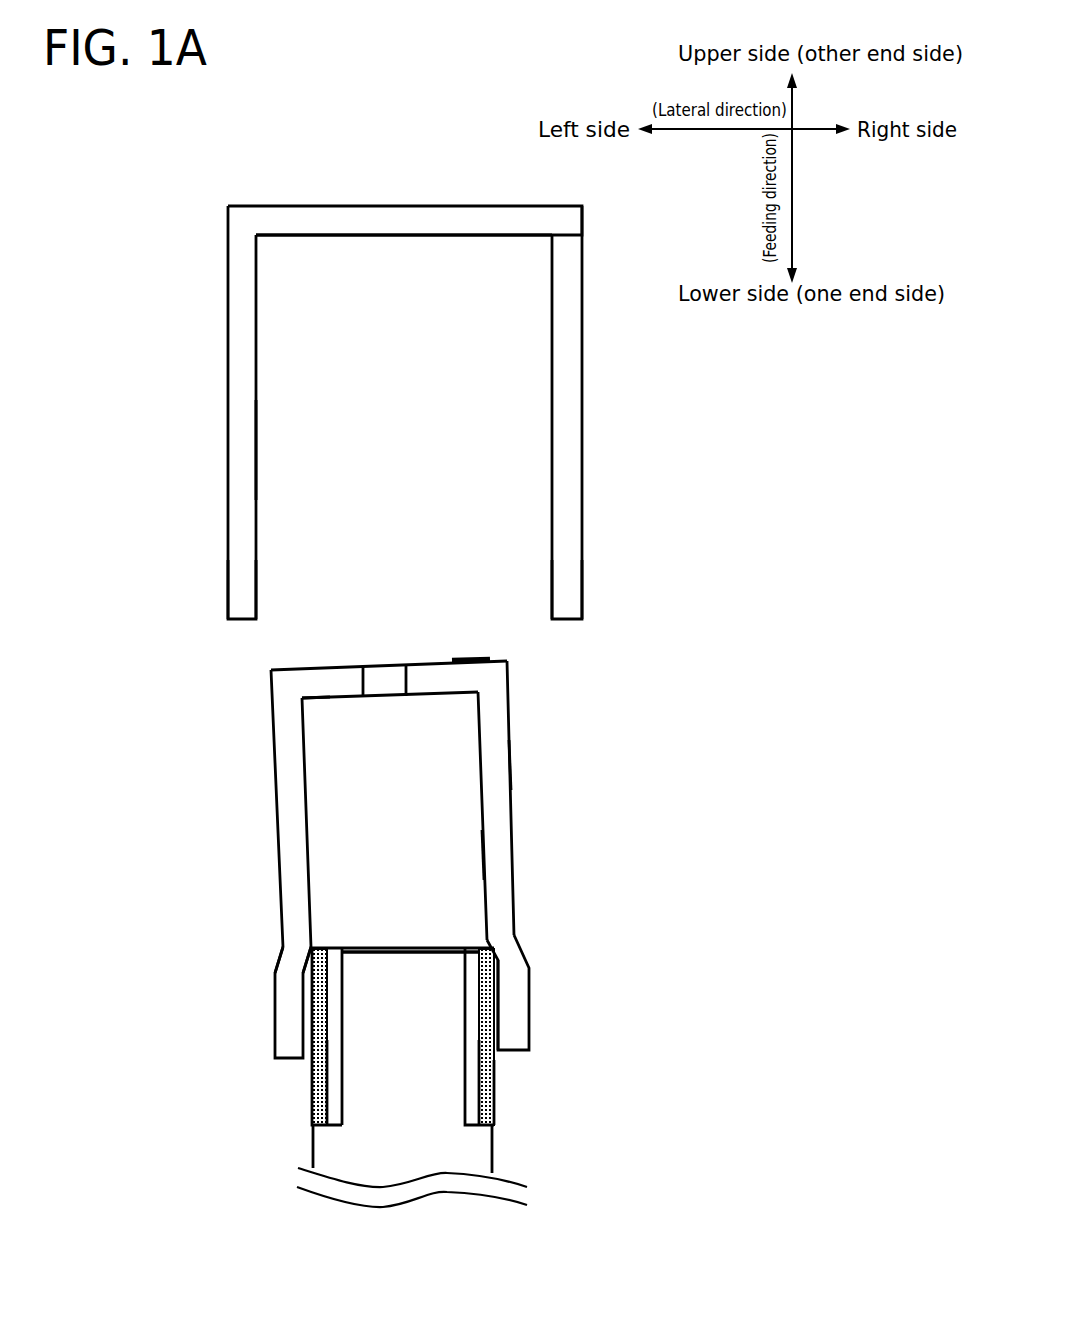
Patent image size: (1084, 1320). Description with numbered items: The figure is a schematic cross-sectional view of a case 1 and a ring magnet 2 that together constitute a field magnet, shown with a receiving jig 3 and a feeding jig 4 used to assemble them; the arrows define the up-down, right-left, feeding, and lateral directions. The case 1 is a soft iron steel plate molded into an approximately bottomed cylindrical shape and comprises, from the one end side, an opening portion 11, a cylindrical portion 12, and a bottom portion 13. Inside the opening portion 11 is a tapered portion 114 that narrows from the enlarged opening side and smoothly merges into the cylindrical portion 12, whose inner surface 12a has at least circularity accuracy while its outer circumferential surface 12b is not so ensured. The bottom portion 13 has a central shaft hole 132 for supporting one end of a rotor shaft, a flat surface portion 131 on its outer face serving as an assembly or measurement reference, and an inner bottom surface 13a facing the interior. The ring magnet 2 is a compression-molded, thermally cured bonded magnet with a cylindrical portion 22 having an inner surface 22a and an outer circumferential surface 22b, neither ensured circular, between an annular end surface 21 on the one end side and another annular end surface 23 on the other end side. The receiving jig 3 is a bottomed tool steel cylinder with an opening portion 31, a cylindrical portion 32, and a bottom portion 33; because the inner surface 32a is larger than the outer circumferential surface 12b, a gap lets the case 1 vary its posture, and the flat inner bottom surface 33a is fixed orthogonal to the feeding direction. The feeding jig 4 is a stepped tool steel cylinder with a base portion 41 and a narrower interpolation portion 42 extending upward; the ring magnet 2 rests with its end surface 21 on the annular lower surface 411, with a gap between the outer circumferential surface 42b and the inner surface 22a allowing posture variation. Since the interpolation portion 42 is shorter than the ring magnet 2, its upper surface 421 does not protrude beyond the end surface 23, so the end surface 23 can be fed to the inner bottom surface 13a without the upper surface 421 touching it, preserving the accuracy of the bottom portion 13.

The case 1 is at (692, 567).
The opening portion 11 is at (527, 997).
The tapered portion 114 is at (492, 958).
The cylindrical portion 12 is at (500, 828).
The inner surface 12a is at (481, 848).
The outer circumferential surface 12b is at (512, 765).
The bottom portion 13 is at (492, 678).
The inner bottom surface 13a is at (331, 700).
The flat surface portion 131 is at (478, 661).
The shaft hole 132 is at (383, 672).
The ring magnet 2 is at (660, 1005).
The annular end surface 21 is at (488, 1130).
The cylindrical portion 22 is at (487, 1032).
The inner surface 22a is at (495, 1060).
The outer circumferential surface 22b is at (495, 1087).
The annular end surface 23 is at (492, 958).
The receiving jig 3 is at (105, 208).
The opening portion 31 is at (242, 616).
The cylindrical portion 32 is at (239, 378).
The inner surface 32a is at (256, 443).
The bottom portion 33 is at (234, 218).
The inner bottom surface 33a is at (317, 236).
The feeding jig 4 is at (148, 948).
The base portion 41 is at (322, 1150).
The lower surface 411 is at (330, 1118).
The interpolation portion 42 is at (370, 999).
The upper surface 421 is at (397, 950).
The outer circumferential surface 42b is at (340, 1032).